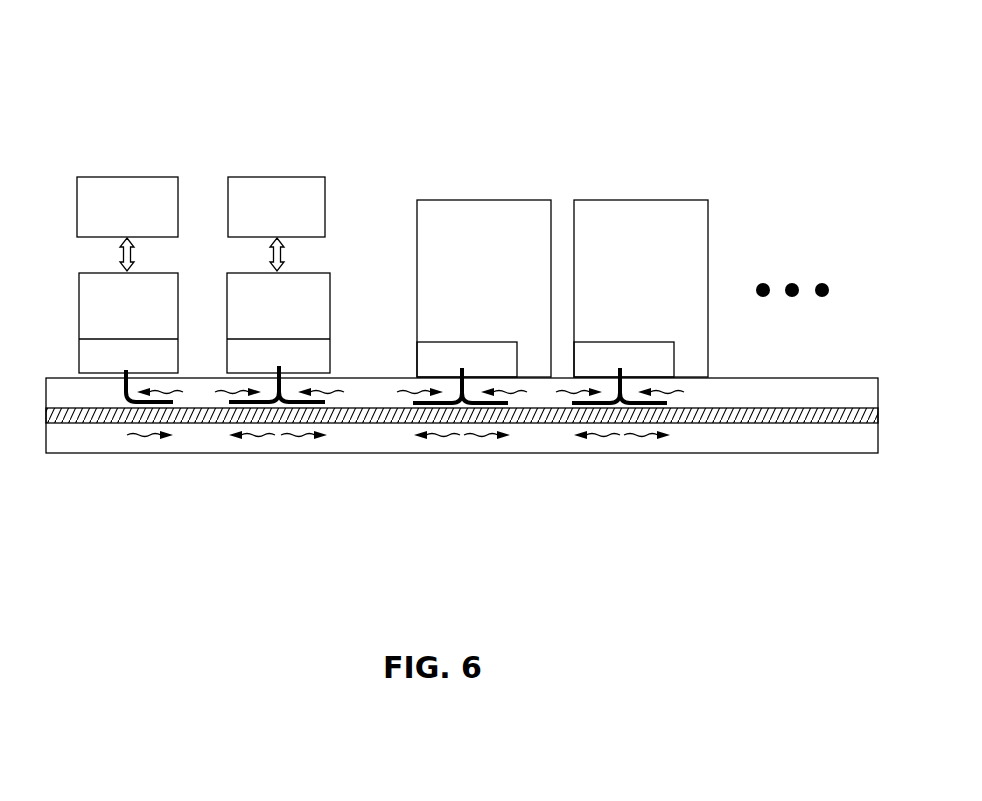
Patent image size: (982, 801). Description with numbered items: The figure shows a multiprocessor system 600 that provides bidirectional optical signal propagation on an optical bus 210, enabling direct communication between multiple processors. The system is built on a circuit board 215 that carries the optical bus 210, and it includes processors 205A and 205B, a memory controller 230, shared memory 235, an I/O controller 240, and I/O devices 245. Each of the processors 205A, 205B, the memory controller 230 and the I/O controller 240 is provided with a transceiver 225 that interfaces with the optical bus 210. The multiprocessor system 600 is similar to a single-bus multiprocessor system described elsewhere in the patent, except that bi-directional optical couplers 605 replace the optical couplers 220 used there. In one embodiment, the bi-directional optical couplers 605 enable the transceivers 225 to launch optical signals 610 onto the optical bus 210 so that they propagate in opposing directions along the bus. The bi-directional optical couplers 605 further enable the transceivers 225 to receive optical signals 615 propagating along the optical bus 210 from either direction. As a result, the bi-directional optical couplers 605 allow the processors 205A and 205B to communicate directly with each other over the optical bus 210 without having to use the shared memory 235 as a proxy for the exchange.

The multiprocessor system 600 is at (790, 78).
The I/O devices 245 is at (148, 177).
The shared memory 235 is at (258, 177).
The I/O controller 240 is at (111, 335).
The memory controller 230 is at (327, 335).
The transceivers 225 is at (176, 365).
The processor 205A is at (458, 313).
The processor 205B is at (619, 313).
The optical bus 210 is at (822, 410).
The circuit board 215 is at (853, 451).
The optical couplers 220 is at (130, 404).
The bi-directional optical couplers 605 is at (318, 404).
The optical signals 610 is at (280, 449).
The optical signals 615 is at (396, 377).